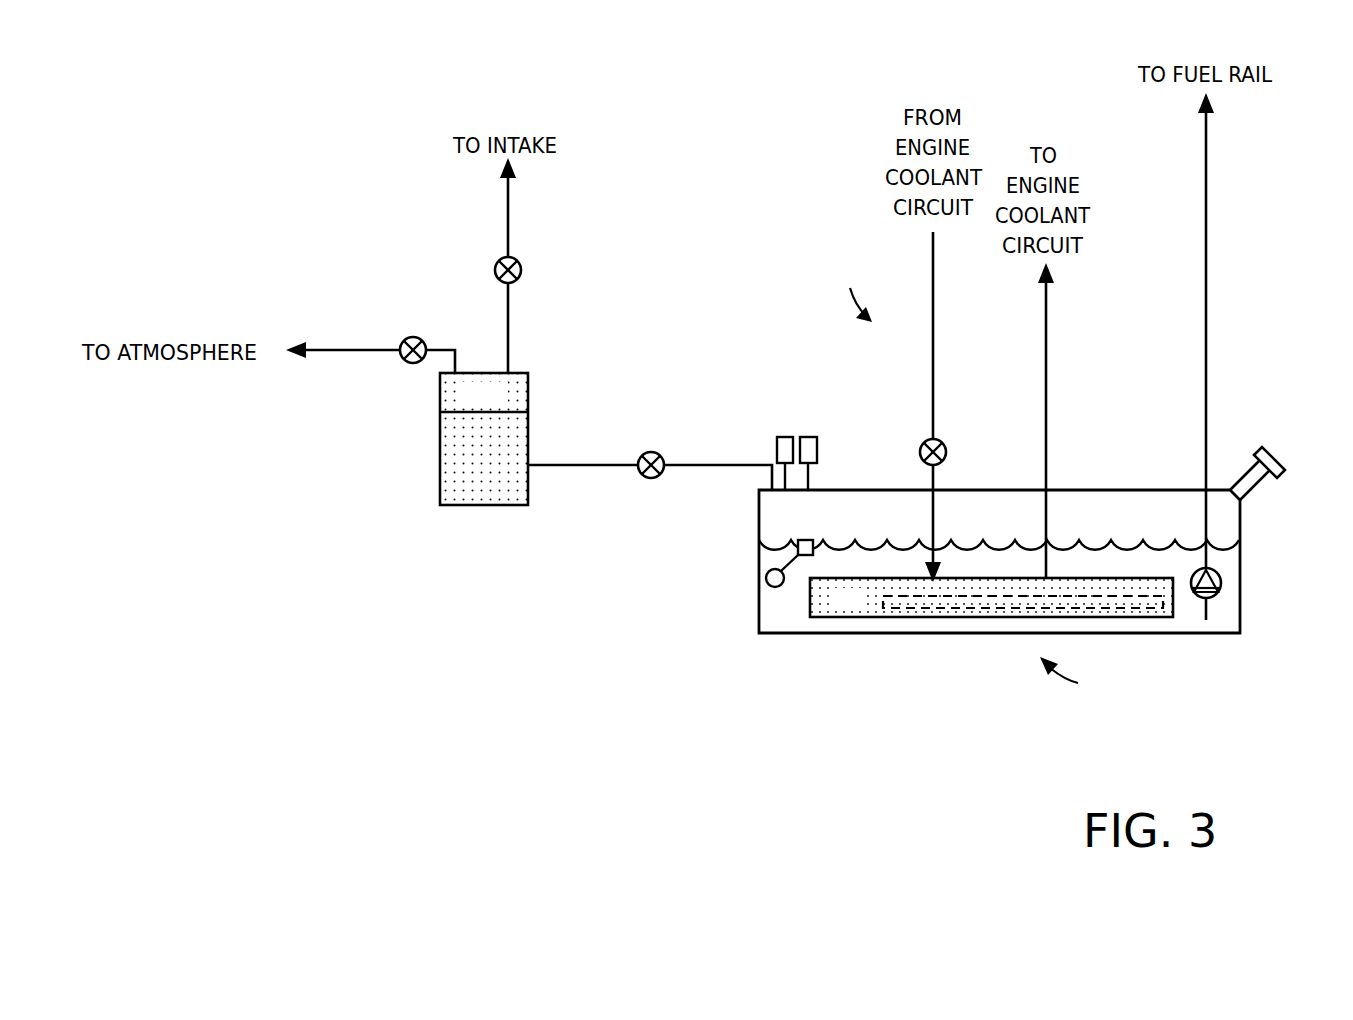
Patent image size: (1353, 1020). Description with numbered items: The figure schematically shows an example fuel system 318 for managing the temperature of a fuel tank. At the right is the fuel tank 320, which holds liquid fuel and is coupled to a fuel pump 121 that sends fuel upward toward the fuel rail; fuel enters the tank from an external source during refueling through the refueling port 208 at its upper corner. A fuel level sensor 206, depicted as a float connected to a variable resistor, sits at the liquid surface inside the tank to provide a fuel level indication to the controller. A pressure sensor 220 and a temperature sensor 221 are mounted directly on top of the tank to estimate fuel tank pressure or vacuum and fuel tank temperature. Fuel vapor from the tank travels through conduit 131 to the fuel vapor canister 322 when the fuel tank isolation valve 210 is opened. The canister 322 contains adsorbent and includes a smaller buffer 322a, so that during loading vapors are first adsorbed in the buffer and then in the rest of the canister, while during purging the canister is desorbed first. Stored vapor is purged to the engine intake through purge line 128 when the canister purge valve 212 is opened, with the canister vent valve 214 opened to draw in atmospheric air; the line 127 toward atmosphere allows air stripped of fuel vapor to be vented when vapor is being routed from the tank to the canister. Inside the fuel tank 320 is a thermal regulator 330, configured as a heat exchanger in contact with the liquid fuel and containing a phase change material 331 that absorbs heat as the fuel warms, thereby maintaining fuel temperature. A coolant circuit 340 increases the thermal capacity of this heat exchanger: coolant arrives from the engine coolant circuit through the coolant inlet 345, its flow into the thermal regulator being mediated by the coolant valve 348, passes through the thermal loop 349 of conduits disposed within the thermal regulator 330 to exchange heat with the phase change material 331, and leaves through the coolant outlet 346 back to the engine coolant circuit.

The fuel pump 121 is at (1221, 591).
The vent line to atmosphere 127 is at (383, 350).
The purge line 128 is at (509, 222).
The conduit 131 is at (709, 465).
The fuel level sensor 206 is at (806, 540).
The refueling port 208 is at (1273, 449).
The fuel tank isolation valve (FTIV) 210 is at (647, 453).
The canister purge valve (CPV) 212 is at (518, 263).
The canister vent valve (CVV) 214 is at (412, 337).
The pressure sensor 220 is at (818, 447).
The temperature sensor 221 is at (789, 437).
The fuel system 318 is at (1077, 677).
The fuel tank 320 is at (757, 633).
The fuel vapor canister 322 is at (468, 453).
The buffer 322a is at (507, 403).
The thermal regulator 330 is at (991, 614).
The phase change material (PCM) 331 is at (862, 609).
The coolant circuit 340 is at (853, 290).
The coolant inlet 345 is at (935, 325).
The coolant outlet 346 is at (1048, 450).
The coolant valve 348 is at (947, 453).
The thermal loop 349 is at (1055, 598).